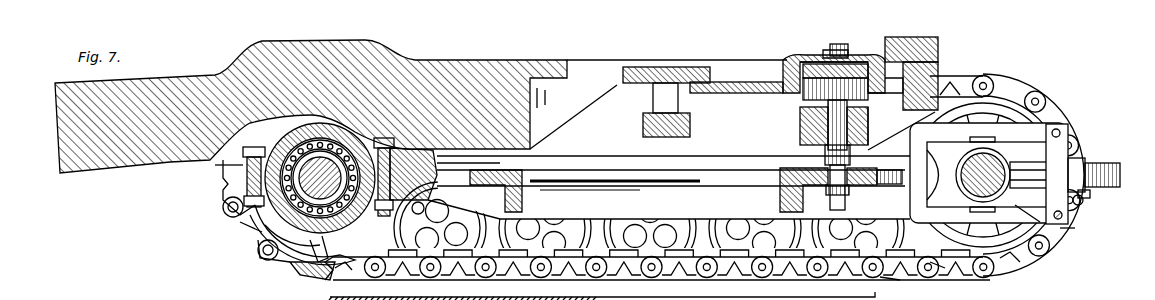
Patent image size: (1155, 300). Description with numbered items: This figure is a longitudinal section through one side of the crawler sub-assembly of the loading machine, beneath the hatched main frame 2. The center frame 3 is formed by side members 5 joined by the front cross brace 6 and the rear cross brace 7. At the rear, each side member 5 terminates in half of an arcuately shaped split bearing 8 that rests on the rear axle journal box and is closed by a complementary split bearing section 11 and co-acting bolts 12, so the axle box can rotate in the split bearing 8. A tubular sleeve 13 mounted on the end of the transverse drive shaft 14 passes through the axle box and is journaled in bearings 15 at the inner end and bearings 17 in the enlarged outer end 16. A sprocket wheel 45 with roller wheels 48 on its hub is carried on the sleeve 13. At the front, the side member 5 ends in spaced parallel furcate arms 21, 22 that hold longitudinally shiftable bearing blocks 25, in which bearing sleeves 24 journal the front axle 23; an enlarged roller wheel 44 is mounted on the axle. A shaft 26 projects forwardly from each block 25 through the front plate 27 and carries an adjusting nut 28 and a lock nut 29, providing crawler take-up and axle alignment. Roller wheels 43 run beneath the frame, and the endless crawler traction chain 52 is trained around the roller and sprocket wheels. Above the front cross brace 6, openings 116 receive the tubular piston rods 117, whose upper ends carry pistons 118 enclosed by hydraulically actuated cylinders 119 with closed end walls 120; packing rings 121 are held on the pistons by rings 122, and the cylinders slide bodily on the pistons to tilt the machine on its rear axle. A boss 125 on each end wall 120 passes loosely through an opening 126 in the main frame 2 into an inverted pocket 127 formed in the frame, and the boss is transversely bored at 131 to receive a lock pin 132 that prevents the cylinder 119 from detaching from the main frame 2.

The main frame 2 is at (486, 60).
The center frame 3 is at (607, 156).
The side members 5 is at (726, 157).
The front cross brace 6 is at (780, 193).
The rear cross brace 7 is at (518, 202).
The split bearing 8 is at (350, 143).
The split bearing sections 11 is at (300, 264).
The bolts 12 is at (246, 222).
The tubular sleeve 13 is at (254, 238).
The drive shaft 14 is at (262, 255).
The bearings 15 is at (242, 170).
The enlarged outer end 16 is at (224, 198).
The bearings 17 is at (332, 279).
The furcate arm 21 is at (978, 123).
The furcate arm 22 is at (1004, 262).
The front axle 23 is at (1005, 155).
The bearing sleeves 24 is at (1063, 125).
The bearing blocks 25 is at (1022, 206).
The shaft 26 is at (1112, 172).
The front plate 27 is at (1075, 228).
The adjusting nut 28 is at (1083, 202).
The lock nut 29 is at (1090, 192).
The roller wheels 43 is at (512, 238).
The enlarged roller wheel 44 is at (942, 268).
The sprocket wheel 45 is at (322, 274).
The roller wheels 48 is at (248, 233).
The endless crawler traction chain 52 is at (890, 280).
The openings 116 is at (850, 184).
The tubular piston rods 117 is at (825, 150).
The pistons 118 is at (868, 122).
The cylinders 119 is at (800, 126).
The closed end wall 120 is at (888, 60).
The packing rings 121 is at (812, 103).
The rings 122 is at (880, 84).
The boss 125 is at (839, 44).
The opening 126 is at (815, 62).
The inverted pocket 127 is at (795, 70).
The transverse bore 131 is at (723, 289).
The lock pin 132 is at (825, 52).